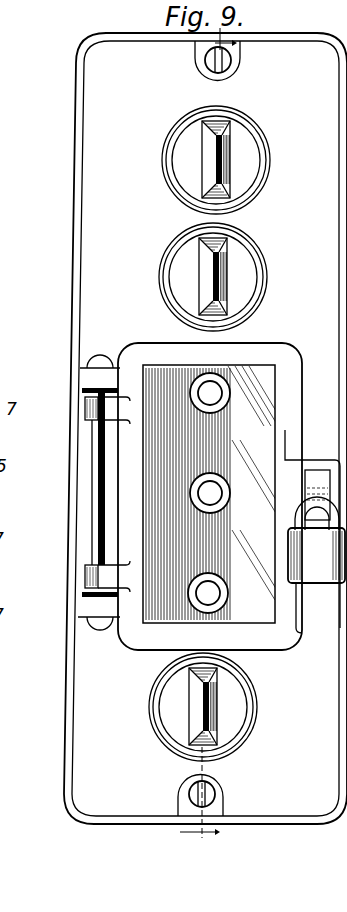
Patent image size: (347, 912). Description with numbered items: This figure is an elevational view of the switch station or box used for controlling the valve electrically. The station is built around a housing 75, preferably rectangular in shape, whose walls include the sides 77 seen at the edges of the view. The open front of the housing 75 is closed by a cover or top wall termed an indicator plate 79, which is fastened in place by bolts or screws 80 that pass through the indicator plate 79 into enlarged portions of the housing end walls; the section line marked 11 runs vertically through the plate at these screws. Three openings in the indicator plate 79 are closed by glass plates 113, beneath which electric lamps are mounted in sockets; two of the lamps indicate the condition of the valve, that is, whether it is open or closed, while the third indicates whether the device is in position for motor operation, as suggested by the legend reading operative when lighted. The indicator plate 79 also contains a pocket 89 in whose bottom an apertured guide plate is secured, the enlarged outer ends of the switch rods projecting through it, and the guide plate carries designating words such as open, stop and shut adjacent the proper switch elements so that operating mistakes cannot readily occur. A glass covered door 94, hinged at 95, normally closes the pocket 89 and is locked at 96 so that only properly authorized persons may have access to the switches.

The housing 75 is at (63, 688).
The indicator plate 79 is at (137, 100).
The sides 77 is at (0, 183).
The screws 80 is at (242, 70).
The section line 11 is at (221, 444).
The glass plates 113 is at (227, 168).
The glass covered door 94 is at (285, 350).
The pocket 89 is at (213, 433).
The hinge 95 is at (82, 393).
The lock 96 is at (303, 502).